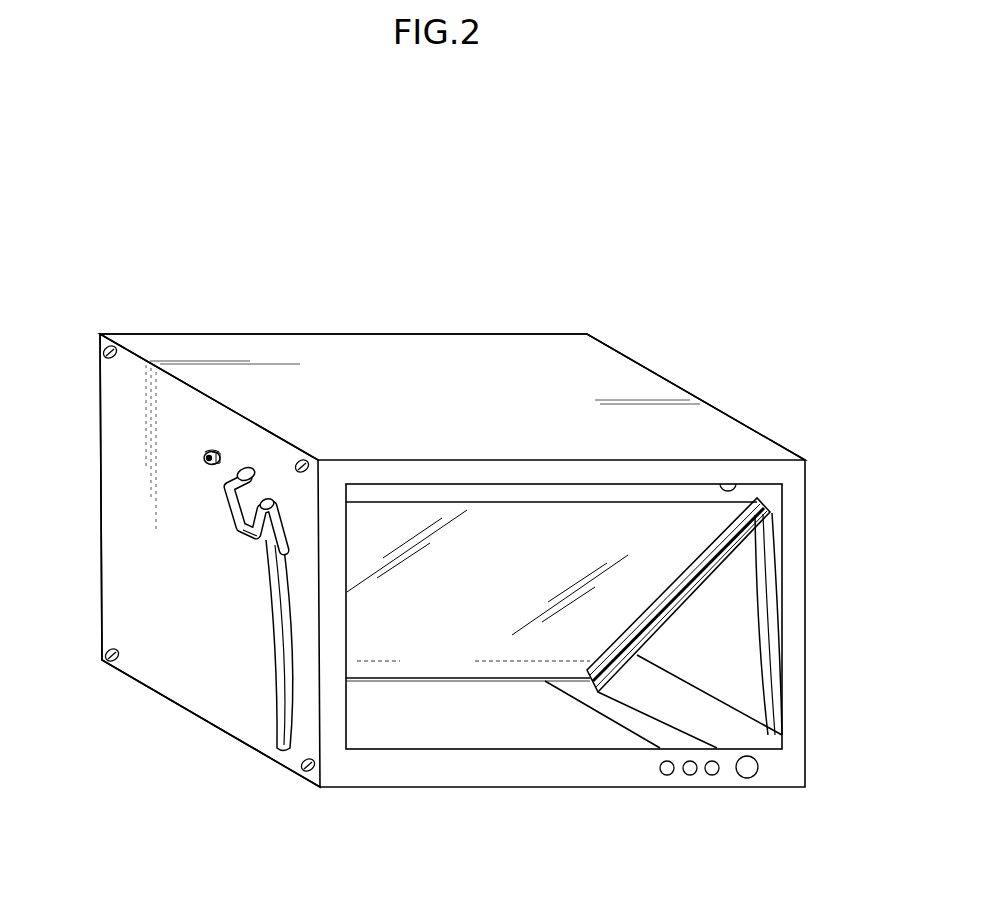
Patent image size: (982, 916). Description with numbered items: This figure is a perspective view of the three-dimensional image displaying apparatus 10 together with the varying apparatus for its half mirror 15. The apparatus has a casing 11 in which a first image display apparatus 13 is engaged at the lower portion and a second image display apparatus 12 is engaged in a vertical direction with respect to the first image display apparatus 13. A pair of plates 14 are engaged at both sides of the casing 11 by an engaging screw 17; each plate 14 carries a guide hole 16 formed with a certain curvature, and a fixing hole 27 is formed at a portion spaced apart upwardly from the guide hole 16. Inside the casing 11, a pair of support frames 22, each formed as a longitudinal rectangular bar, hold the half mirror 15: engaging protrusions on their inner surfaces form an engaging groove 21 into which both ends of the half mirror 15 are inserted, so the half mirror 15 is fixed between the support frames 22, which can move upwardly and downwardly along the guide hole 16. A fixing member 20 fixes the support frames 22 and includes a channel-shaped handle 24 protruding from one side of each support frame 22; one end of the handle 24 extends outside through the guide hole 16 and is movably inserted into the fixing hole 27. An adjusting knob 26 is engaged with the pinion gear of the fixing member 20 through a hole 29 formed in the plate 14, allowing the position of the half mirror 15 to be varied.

The 3D image displaying apparatus 10 is at (563, 291).
The casing 11 is at (632, 380).
The second image display apparatus 12 is at (358, 487).
The first image display apparatus 13 is at (573, 722).
The plates 14 is at (185, 658).
The half mirror 15 is at (460, 617).
The guide hole 16 is at (278, 637).
The engaging screw 17 is at (303, 762).
The fixing member 20 is at (228, 522).
The engaging groove 21 is at (770, 513).
The support frames 22 is at (703, 577).
The handle 24 is at (250, 533).
The adjusting knob 26 is at (205, 460).
The fixing hole 27 is at (243, 468).
The hole 29 is at (217, 450).